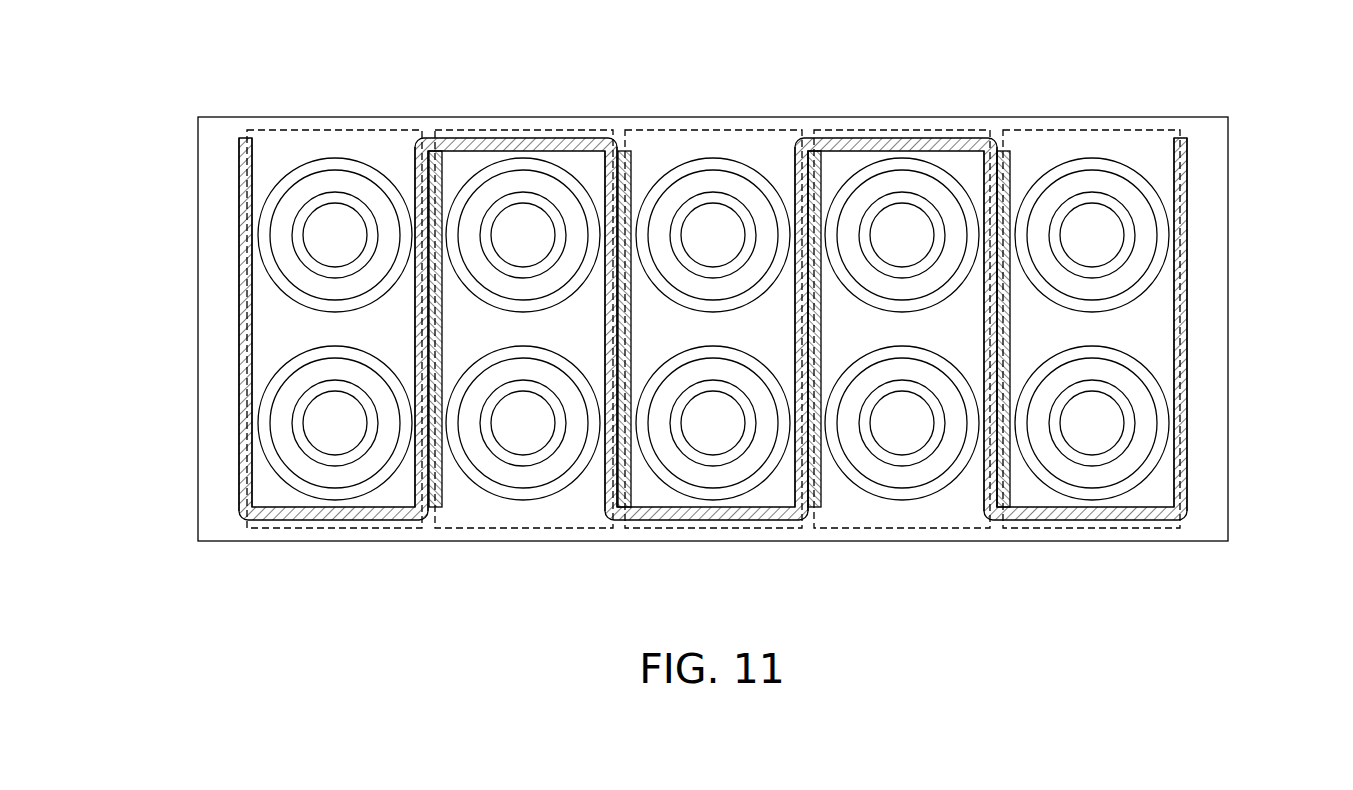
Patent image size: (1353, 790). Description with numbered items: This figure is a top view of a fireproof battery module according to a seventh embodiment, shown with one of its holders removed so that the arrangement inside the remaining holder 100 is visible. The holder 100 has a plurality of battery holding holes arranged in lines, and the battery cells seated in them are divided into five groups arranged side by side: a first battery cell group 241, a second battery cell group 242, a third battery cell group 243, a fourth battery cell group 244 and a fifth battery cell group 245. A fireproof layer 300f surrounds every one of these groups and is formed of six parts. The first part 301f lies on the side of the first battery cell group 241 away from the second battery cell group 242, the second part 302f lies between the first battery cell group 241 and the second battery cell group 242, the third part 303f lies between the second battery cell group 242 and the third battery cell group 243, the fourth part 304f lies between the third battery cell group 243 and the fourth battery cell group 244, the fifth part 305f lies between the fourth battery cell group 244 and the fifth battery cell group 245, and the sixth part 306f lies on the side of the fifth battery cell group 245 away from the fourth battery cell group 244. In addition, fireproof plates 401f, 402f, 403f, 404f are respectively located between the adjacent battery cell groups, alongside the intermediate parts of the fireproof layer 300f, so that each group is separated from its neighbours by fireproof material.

The holder 100 is at (1207, 178).
The fireproof layer 300f is at (1200, 290).
The first battery cell group 241 is at (340, 129).
The second battery cell group 242 is at (528, 129).
The third battery cell group 243 is at (718, 129).
The fourth battery cell group 244 is at (908, 129).
The fifth battery cell group 245 is at (1098, 129).
The first part 301f is at (239, 358).
The second part 302f is at (415, 481).
The third part 303f is at (607, 481).
The fourth part 304f is at (795, 480).
The fifth part 305f is at (985, 480).
The sixth part 306f is at (1182, 378).
The fireproof plate 401f is at (442, 483).
The fireproof plate 402f is at (628, 480).
The fireproof plate 403f is at (818, 480).
The fireproof plate 404f is at (1010, 477).